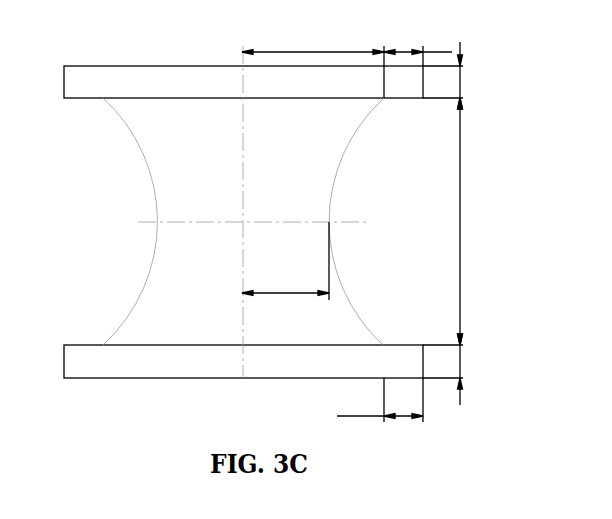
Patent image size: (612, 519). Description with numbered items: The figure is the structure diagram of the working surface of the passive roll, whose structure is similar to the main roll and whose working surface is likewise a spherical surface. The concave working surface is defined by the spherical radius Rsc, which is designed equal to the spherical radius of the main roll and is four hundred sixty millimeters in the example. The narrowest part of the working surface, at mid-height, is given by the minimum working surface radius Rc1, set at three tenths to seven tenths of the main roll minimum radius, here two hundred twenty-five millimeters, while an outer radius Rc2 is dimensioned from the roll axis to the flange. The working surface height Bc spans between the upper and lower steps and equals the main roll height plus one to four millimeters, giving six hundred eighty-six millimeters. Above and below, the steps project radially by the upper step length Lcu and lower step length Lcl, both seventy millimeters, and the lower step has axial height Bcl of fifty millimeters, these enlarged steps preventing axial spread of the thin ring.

The radius of flange (outer) portion of the roller Rc2 is at (313, 60).
The radial length of the upper step Lcu is at (418, 44).
The axial height of the lower step Bcl is at (443, 223).
The working surface height of passive roll Bc is at (445, 221).
The spherical radius of passive roll Rsc is at (340, 172).
The minimum working surface radius of passive roll Rc1 is at (285, 261).
The radial length of the lower step Lcl is at (380, 400).